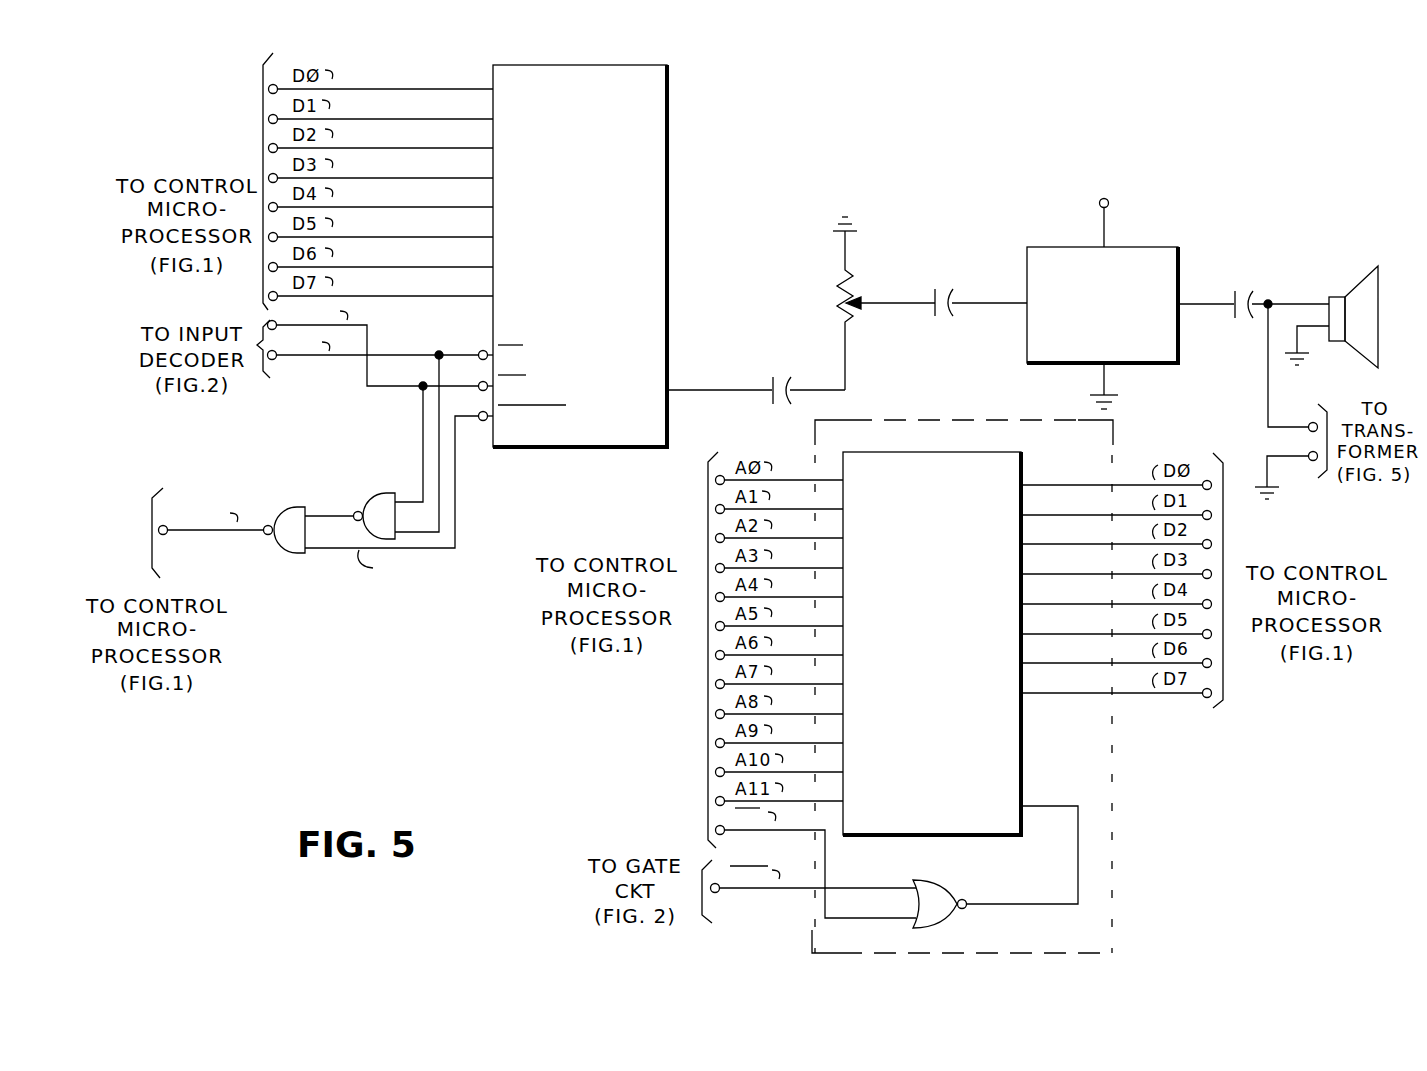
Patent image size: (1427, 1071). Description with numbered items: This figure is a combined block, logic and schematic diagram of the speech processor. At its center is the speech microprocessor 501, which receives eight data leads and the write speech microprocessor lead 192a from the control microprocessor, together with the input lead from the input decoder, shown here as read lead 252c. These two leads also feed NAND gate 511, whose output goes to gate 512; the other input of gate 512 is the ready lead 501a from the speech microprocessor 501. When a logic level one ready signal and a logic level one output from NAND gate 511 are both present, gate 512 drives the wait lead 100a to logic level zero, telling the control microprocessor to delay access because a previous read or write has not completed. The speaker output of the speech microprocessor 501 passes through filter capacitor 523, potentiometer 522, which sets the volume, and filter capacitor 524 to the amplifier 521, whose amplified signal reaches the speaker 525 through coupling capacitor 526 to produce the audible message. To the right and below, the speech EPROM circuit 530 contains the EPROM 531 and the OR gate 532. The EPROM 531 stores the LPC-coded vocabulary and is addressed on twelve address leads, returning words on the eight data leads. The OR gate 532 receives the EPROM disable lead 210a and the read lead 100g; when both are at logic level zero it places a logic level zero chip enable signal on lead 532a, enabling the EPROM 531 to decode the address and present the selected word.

The speech microprocessor 501 is at (558, 323).
The ready lead 501a is at (458, 499).
The NAND gate 511 is at (383, 487).
The gate 512 is at (297, 503).
The wait lead 100a is at (170, 534).
The read lead 252c is at (437, 352).
The write speech microprocessor lead 192a is at (420, 389).
The amplifier 521 is at (1082, 342).
The potentiometer 522 is at (841, 285).
The filter capacitor 523 is at (775, 367).
The filter capacitor 524 is at (957, 275).
The speaker 525 is at (1359, 274).
The coupling capacitor 526 is at (1245, 287).
The speech EPROM circuit 530 is at (1092, 448).
The EPROM 531 is at (908, 662).
The OR gate 532 is at (957, 869).
The chip enable lead 532a is at (1048, 788).
The EPROM disable lead 210a is at (887, 883).
The read lead 100g is at (883, 928).